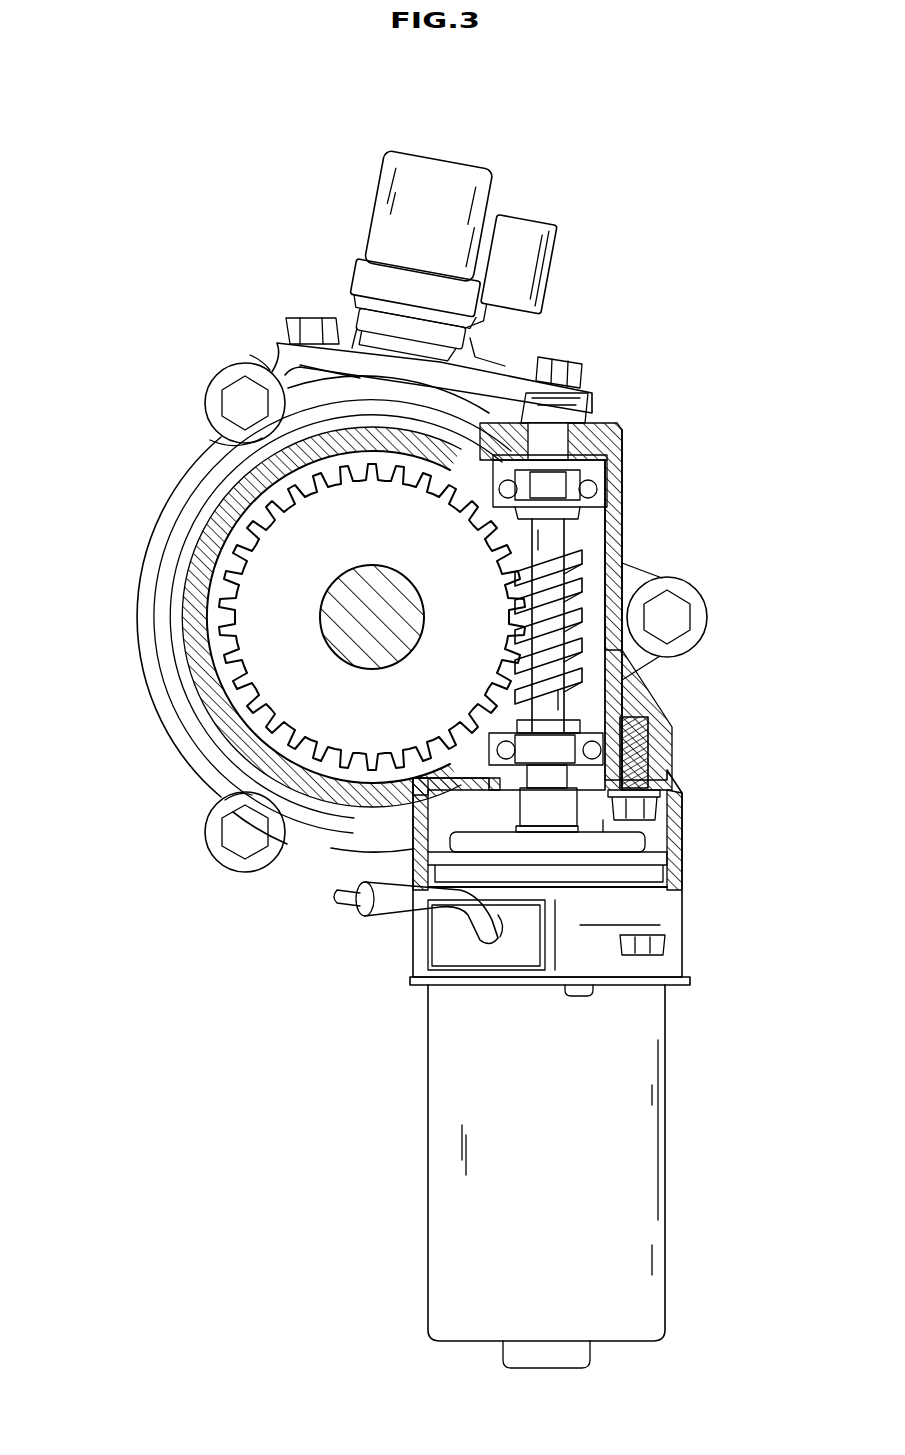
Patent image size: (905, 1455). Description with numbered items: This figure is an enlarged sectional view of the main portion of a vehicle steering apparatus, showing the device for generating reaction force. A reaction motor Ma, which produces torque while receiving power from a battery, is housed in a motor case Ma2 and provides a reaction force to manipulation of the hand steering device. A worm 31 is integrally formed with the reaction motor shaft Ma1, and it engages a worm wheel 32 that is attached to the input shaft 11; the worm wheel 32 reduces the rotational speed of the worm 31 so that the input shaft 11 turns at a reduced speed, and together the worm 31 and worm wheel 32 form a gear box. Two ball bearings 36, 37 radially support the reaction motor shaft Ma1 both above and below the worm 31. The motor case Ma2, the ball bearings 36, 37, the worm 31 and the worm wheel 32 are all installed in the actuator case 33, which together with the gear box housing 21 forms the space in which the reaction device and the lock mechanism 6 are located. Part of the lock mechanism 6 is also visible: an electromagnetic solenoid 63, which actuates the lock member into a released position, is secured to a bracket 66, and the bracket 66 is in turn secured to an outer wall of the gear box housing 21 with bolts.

The lock mechanism 6 is at (436, 257).
The input shaft 11 is at (370, 617).
The gear box housing 21 is at (300, 370).
The worm 31 is at (582, 568).
The worm wheel 32 is at (560, 545).
The actuator case 33 is at (602, 440).
The ball bearing 36 is at (600, 482).
The ball bearing 37 is at (603, 742).
The electromagnetic solenoid 63 is at (372, 208).
The bracket 66 is at (495, 366).
The reaction motor Ma is at (665, 1140).
The reaction motor shaft Ma1 is at (550, 700).
The motor case Ma2 is at (690, 850).